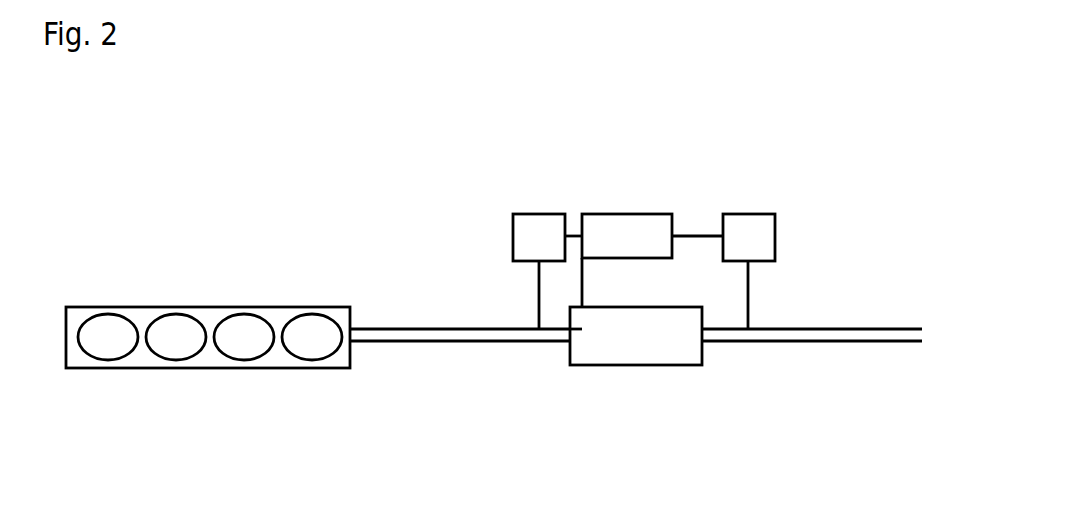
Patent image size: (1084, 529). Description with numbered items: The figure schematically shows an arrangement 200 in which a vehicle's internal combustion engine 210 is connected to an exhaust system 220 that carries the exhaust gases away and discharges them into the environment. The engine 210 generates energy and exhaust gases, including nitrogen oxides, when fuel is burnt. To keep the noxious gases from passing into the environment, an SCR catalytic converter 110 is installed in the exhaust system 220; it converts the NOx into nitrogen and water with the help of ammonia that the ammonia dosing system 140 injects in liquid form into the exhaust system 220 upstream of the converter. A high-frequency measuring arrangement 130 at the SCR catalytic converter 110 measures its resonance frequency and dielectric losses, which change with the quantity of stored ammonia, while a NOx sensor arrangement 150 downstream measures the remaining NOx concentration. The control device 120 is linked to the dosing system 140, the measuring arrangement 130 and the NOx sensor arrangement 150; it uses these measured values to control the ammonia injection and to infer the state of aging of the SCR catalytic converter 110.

The exhaust gas aftertreatment system 200 is at (285, 217).
The internal combustion engine 210 is at (77, 317).
The exhaust system 220 is at (432, 337).
The SCR catalytic converter 110 is at (658, 350).
The control device 120 is at (653, 235).
The high-frequency measuring arrangement 130 is at (585, 317).
The ammonia dosing system 140 is at (532, 230).
The NOx sensor arrangement 150 is at (757, 236).